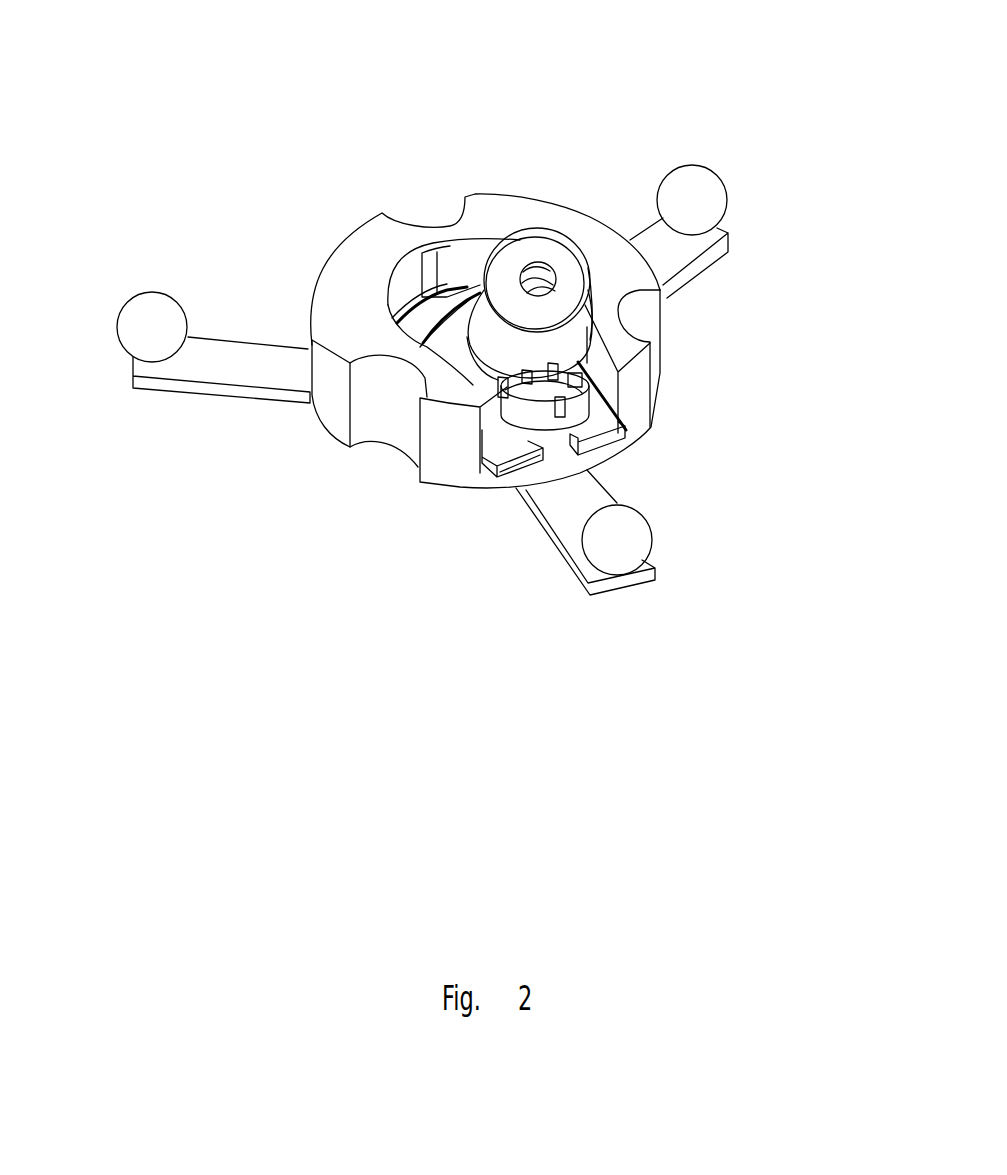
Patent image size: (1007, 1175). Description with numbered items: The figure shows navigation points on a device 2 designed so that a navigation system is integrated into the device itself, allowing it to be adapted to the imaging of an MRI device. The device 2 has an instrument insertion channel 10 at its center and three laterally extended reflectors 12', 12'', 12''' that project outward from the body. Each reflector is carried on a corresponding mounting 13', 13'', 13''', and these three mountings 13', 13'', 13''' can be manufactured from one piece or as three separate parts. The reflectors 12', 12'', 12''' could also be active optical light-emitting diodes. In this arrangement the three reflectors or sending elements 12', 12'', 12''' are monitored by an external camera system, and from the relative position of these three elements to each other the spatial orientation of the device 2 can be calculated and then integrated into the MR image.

The device 2 is at (337, 277).
The instrument insertion channel 10 is at (401, 270).
The reflector 12' is at (722, 124).
The reflector 12'' is at (119, 412).
The reflector 12''' is at (634, 630).
The mounting 13' is at (766, 257).
The mounting 13'' is at (221, 446).
The mounting 13''' is at (574, 589).